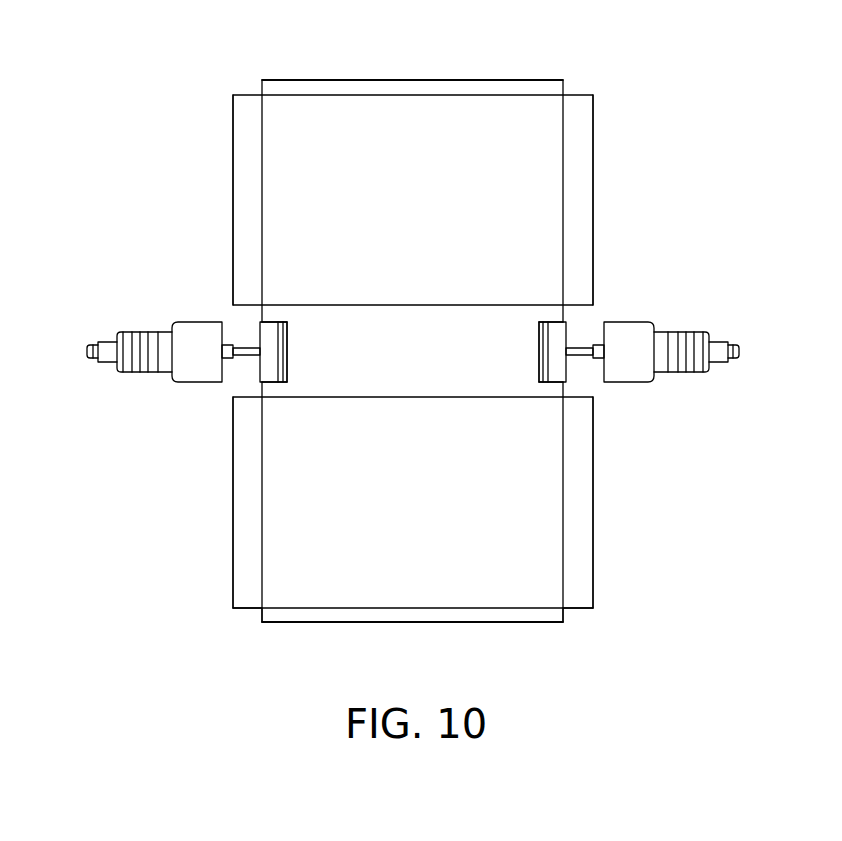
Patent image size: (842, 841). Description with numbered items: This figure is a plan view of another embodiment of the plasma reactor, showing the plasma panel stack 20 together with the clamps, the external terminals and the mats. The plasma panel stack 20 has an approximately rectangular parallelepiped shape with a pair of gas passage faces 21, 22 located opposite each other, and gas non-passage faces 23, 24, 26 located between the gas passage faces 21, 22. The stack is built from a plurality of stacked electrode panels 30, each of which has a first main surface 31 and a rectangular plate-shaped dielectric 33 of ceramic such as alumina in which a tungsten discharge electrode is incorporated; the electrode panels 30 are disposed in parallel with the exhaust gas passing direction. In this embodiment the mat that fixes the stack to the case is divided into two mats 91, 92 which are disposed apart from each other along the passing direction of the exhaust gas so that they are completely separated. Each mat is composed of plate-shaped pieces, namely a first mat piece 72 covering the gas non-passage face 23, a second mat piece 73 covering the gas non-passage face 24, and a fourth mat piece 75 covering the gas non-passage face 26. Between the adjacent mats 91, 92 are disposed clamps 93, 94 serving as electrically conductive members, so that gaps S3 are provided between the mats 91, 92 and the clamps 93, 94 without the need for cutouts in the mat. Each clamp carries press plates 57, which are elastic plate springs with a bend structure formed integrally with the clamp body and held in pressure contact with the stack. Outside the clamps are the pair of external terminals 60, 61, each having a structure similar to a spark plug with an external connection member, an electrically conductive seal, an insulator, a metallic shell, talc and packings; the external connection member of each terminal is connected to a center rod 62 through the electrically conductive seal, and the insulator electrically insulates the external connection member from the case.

The plasma panel stack 20 is at (561, 73).
The gas passage face 21 is at (318, 624).
The gas passage face 22 is at (469, 80).
The gas non-passage face 23 is at (316, 88).
The gas non-passage face 24 is at (566, 617).
The gas non-passage face 26 is at (258, 618).
The electrode panel 30 is at (390, 86).
The first main surface 31 is at (402, 367).
The dielectric 33 is at (497, 618).
The press plate 57 is at (272, 336).
The external terminal 60 is at (739, 352).
The external terminal 61 is at (87, 352).
The center rod 62 is at (247, 353).
The first mat piece 72 is at (436, 110).
The second mat piece 73 is at (589, 212).
The fourth mat piece 75 is at (248, 182).
The mat 91 is at (596, 556).
The mat 92 is at (596, 149).
The clamp 93 is at (538, 353).
The clamp 94 is at (288, 353).
The gap S3 is at (279, 316).